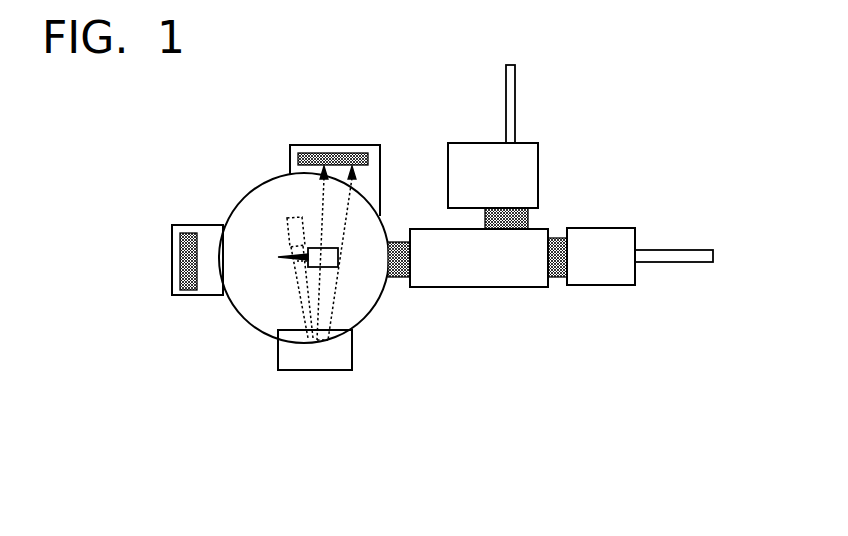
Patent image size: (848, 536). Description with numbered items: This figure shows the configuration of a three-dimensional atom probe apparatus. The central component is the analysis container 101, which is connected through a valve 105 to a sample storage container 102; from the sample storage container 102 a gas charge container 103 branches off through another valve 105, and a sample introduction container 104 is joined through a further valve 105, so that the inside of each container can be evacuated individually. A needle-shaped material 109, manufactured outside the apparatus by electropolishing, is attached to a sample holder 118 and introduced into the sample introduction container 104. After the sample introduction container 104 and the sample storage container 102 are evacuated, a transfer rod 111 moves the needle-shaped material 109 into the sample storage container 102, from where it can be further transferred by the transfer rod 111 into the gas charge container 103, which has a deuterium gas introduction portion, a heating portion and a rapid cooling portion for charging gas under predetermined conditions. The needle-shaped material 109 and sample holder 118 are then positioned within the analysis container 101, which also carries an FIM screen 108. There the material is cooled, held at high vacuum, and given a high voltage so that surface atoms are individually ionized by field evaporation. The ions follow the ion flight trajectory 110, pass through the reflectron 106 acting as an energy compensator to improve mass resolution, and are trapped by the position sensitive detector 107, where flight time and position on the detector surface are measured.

The analysis container 101 is at (232, 210).
The sample storage container 102 is at (493, 287).
The gas charge container 103 is at (538, 152).
The sample introduction container 104 is at (610, 287).
The valve 105 is at (397, 242).
The reflectron 106 is at (320, 370).
The position sensitive detector 107 is at (335, 155).
The FIM screen 108 is at (190, 298).
The needle-shaped material 109 is at (292, 260).
The ion flight trajectory 110 is at (320, 203).
The transfer rod 111 is at (515, 83).
The sample holder 118 is at (338, 262).